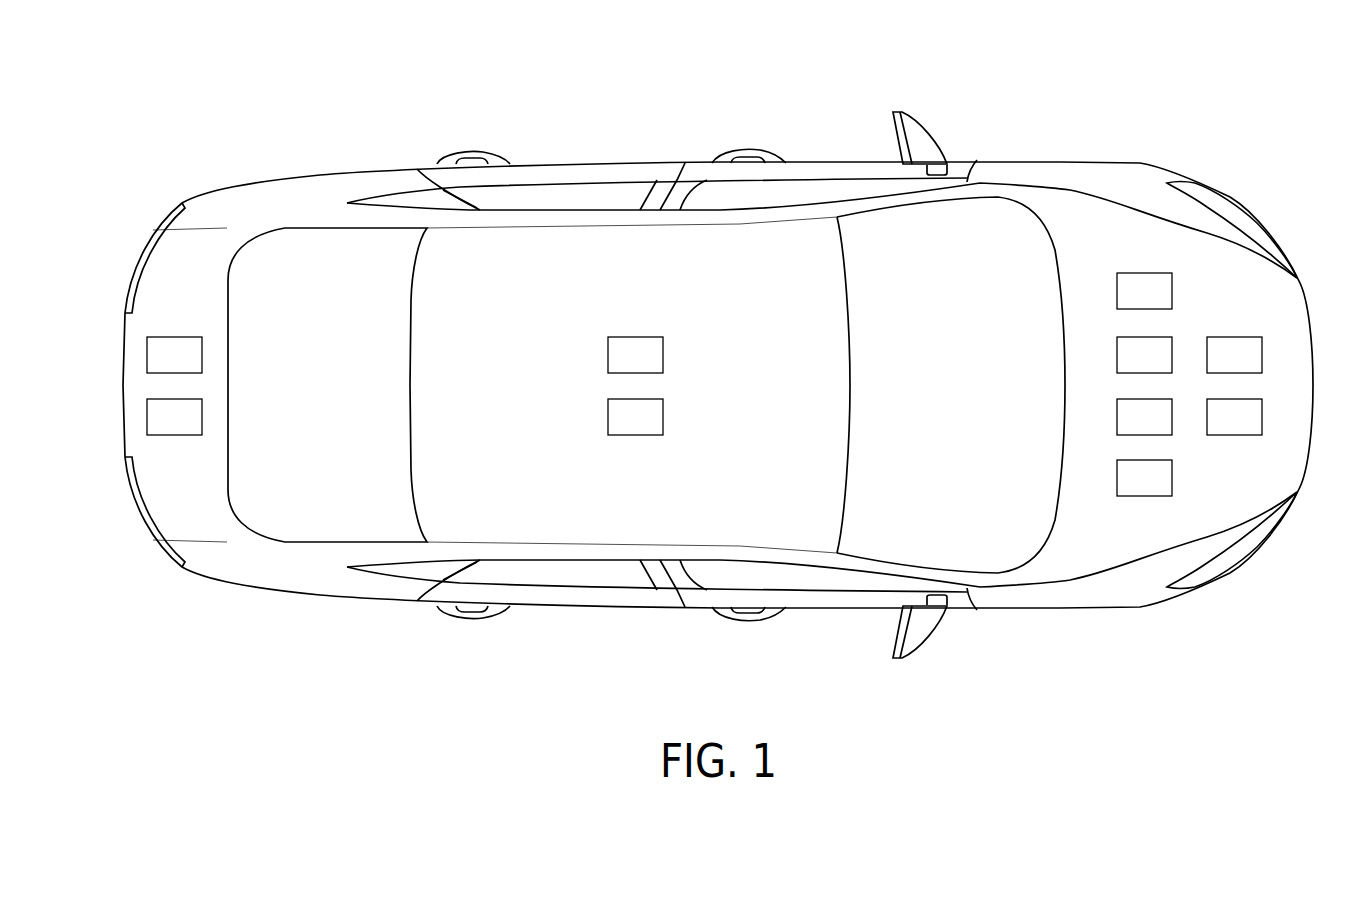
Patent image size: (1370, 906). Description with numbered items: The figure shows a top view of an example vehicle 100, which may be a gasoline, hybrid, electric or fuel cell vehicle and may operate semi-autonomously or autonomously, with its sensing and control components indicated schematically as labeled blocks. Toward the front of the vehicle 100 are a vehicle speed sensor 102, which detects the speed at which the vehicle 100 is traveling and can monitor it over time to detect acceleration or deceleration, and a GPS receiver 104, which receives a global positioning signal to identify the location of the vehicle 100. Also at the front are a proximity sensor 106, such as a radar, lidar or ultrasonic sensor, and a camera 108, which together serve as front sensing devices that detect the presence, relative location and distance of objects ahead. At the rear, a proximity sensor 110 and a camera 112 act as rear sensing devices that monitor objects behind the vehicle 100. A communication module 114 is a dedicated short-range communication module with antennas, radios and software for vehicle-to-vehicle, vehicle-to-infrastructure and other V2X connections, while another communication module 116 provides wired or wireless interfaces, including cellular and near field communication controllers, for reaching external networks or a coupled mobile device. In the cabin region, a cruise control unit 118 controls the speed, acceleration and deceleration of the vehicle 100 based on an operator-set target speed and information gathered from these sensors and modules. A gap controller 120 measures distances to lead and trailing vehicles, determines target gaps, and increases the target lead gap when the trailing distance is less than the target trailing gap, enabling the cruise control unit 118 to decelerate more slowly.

The vehicle 100 is at (1103, 92).
The vehicle speed sensor 102 is at (1126, 302).
The global positioning system (GPS) receiver 104 is at (1126, 366).
The proximity sensor 106 is at (1216, 366).
The camera 108 is at (1216, 428).
The proximity sensor 110 is at (156, 366).
The camera 112 is at (156, 428).
The communication module 114 is at (1126, 428).
The communication module 116 is at (1126, 490).
The cruise control unit 118 is at (617, 366).
The gap controller 120 is at (617, 428).